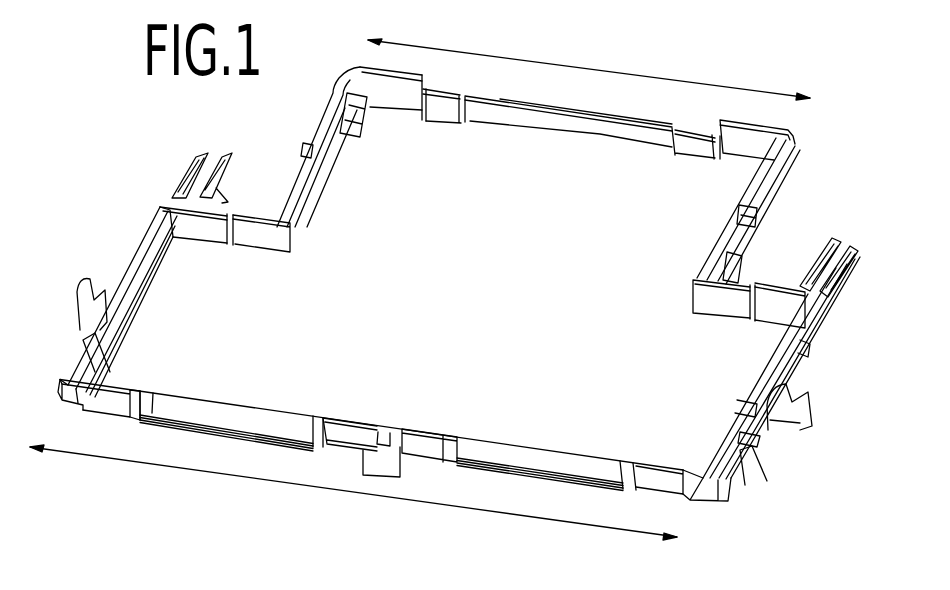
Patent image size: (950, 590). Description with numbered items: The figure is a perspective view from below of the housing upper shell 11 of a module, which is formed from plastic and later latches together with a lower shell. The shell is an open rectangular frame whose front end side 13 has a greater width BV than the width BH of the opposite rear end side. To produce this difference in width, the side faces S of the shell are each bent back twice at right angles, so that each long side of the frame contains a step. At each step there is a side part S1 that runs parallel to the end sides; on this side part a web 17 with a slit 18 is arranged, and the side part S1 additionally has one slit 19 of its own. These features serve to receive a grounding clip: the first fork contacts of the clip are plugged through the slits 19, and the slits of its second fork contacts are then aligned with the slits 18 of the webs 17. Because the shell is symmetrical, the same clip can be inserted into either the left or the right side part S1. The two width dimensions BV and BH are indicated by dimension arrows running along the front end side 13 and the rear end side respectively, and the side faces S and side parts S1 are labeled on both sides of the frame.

The housing upper shell 11 is at (668, 111).
The front end side 13 is at (270, 440).
The web 17 is at (213, 168).
The slit 18 is at (195, 164).
The slit 19 is at (230, 247).
The side face S is at (130, 256).
The side part S1 is at (262, 205).
The width of the rear end side BH is at (589, 67).
The width of the front end side BV is at (353, 492).